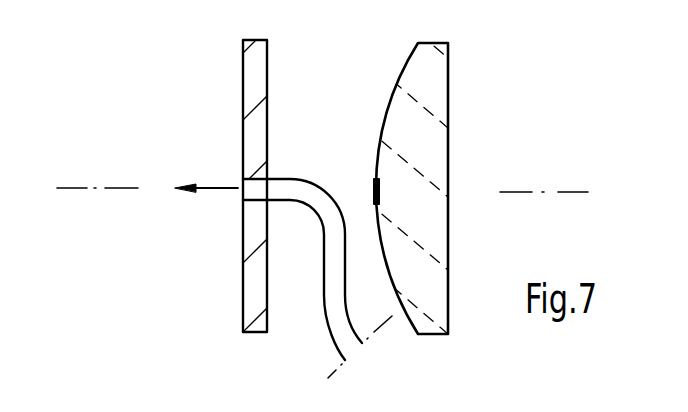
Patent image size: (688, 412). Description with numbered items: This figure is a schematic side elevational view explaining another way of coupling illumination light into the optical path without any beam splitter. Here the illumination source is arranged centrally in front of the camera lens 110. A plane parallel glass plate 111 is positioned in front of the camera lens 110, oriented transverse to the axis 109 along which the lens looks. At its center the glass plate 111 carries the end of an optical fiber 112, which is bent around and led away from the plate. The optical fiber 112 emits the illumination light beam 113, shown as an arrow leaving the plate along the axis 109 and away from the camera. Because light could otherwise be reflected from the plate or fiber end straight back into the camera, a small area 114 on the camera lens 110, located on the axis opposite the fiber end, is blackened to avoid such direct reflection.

The axis 109 is at (72, 187).
The camera lens 110 is at (440, 87).
The plane parallel glass plate 111 is at (257, 72).
The optical fiber 112 is at (330, 310).
The illumination light beam 113 is at (226, 187).
The small blackened area 114 is at (372, 190).